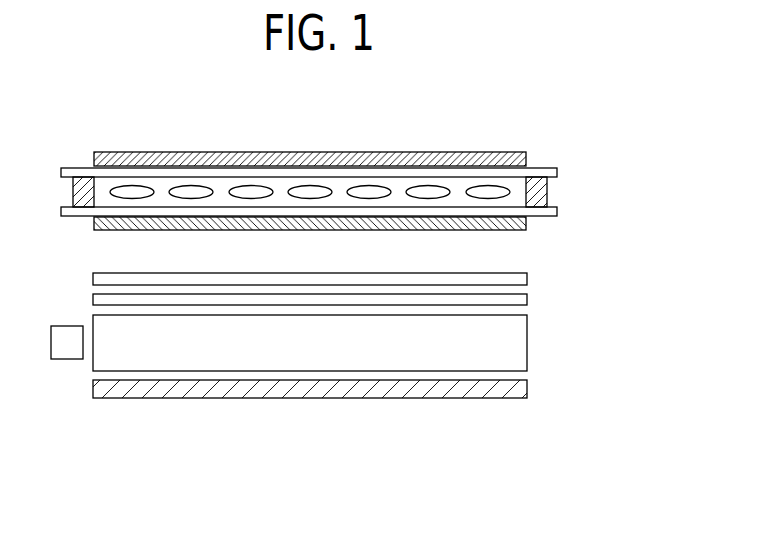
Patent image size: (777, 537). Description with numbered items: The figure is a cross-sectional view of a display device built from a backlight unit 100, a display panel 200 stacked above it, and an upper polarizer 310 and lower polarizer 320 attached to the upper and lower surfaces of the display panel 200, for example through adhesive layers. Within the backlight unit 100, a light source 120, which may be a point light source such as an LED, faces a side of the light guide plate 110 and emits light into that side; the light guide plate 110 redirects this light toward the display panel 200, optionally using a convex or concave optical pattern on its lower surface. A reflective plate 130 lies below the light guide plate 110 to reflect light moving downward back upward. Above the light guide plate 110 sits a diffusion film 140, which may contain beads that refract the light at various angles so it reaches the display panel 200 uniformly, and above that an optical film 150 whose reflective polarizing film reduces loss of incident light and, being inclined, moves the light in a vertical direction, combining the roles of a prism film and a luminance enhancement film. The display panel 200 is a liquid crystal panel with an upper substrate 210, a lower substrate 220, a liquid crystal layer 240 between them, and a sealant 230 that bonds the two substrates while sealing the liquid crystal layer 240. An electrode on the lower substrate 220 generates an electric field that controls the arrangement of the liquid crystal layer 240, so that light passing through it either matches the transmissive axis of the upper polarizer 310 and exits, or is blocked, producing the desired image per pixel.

The backlight unit 100 is at (289, 382).
The light guide plate 110 is at (178, 347).
The light source 120 is at (68, 389).
The reflective plate 130 is at (243, 388).
The diffusion film 140 is at (305, 300).
The optical film 150 is at (365, 278).
The display panel 200 is at (368, 180).
The upper substrate 210 is at (558, 172).
The lower substrate 220 is at (558, 215).
The sealant 230 is at (543, 190).
The liquid crystal layer 240 is at (493, 189).
The upper polarizer 310 is at (523, 165).
The lower polarizer 320 is at (525, 229).